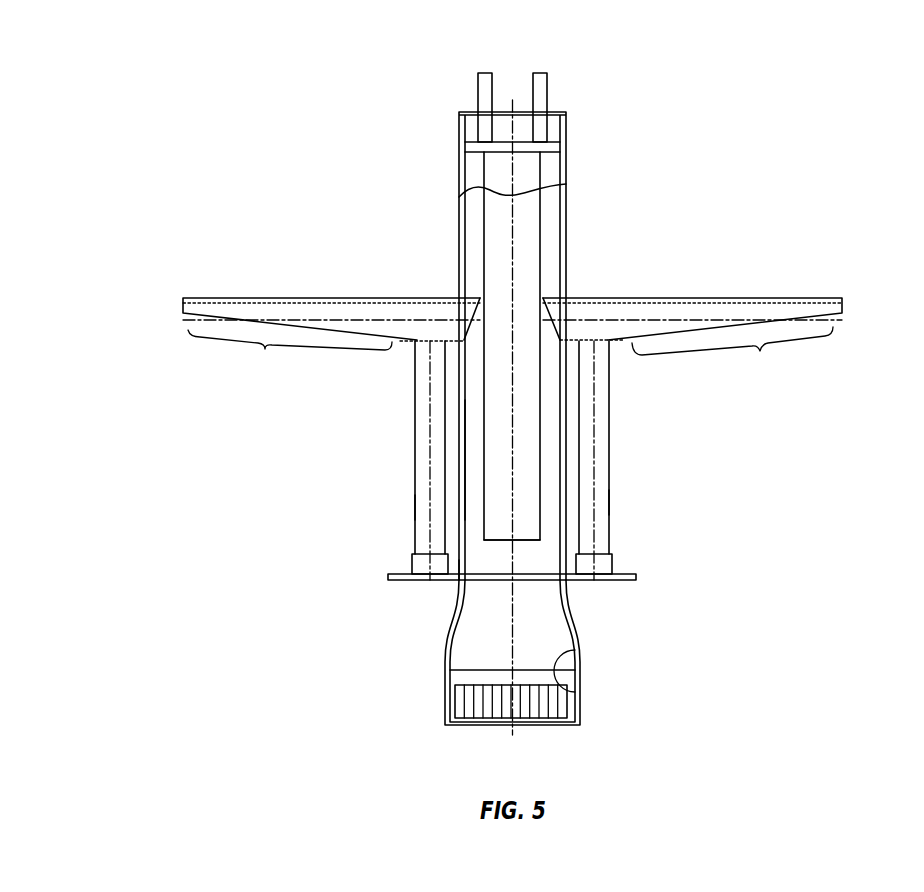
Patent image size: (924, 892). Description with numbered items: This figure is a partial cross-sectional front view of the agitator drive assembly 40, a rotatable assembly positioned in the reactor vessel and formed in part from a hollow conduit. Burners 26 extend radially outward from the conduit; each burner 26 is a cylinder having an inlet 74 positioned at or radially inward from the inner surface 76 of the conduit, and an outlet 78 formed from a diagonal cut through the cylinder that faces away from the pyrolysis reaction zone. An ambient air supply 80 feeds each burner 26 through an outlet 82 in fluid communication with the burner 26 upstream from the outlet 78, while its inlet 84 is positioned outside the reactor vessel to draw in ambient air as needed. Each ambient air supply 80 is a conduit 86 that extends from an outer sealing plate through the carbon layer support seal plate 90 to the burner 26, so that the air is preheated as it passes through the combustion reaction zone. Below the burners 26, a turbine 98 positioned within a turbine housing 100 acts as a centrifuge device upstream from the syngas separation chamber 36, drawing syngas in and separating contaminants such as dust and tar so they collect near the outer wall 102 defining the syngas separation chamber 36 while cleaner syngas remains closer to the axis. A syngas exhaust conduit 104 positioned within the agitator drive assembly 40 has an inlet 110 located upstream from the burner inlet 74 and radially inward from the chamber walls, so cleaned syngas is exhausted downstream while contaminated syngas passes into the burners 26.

The agitator drive assembly 40 is at (682, 106).
The burner 26 is at (283, 298).
The inlet 74 is at (475, 309).
The inner surface 76 is at (463, 462).
The outlet 78 is at (510, 360).
The ambient air supply 80 is at (532, 400).
The outlet 82 is at (418, 340).
The inlet 84 is at (607, 340).
The conduit 86 is at (420, 507).
The carbon layer support seal plate 90 is at (615, 573).
The turbine 98 is at (478, 720).
The turbine housing 100 is at (575, 655).
The outer wall 102 is at (462, 563).
The syngas exhaust conduit 104 is at (538, 430).
The inlet 110 is at (500, 543).
The syngas separation chamber 36 is at (477, 643).